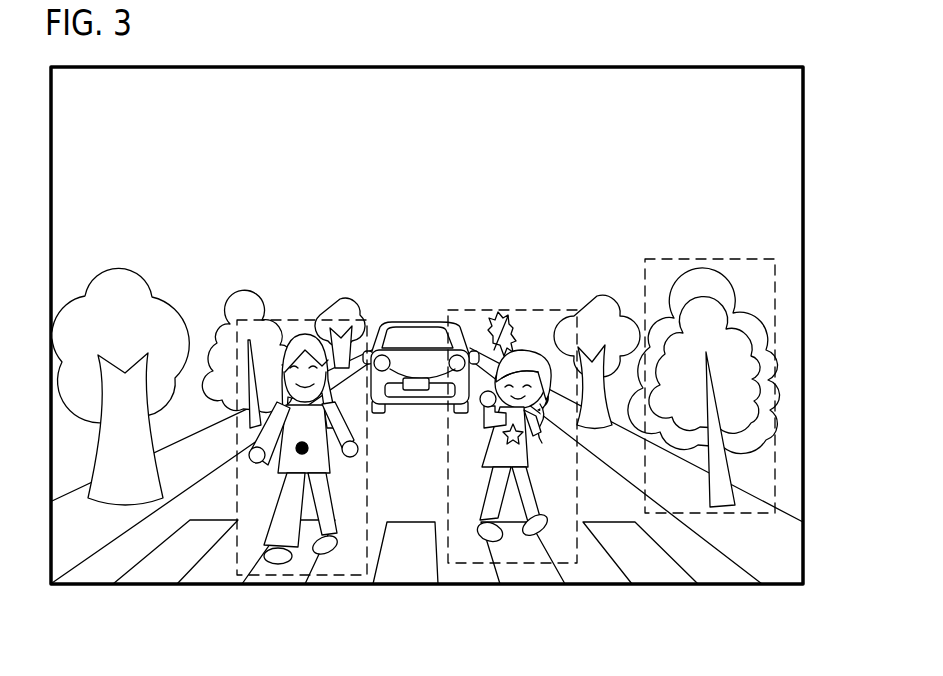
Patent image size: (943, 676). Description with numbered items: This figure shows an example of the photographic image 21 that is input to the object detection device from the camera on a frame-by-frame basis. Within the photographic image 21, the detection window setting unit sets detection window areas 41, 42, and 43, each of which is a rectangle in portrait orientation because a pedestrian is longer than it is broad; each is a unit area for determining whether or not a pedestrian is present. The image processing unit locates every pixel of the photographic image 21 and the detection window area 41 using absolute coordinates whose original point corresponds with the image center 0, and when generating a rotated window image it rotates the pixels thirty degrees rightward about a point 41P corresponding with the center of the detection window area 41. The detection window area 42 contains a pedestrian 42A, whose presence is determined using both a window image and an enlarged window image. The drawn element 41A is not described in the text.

The photographic image 21 is at (672, 67).
The center of the photographic image 0 is at (426, 320).
The detection window area 41 is at (368, 548).
The first pedestrian 41A is at (278, 563).
The point 41P is at (306, 452).
The detection window area 42 is at (578, 540).
The pedestrian 42A is at (530, 533).
The detection window area 43 is at (712, 513).